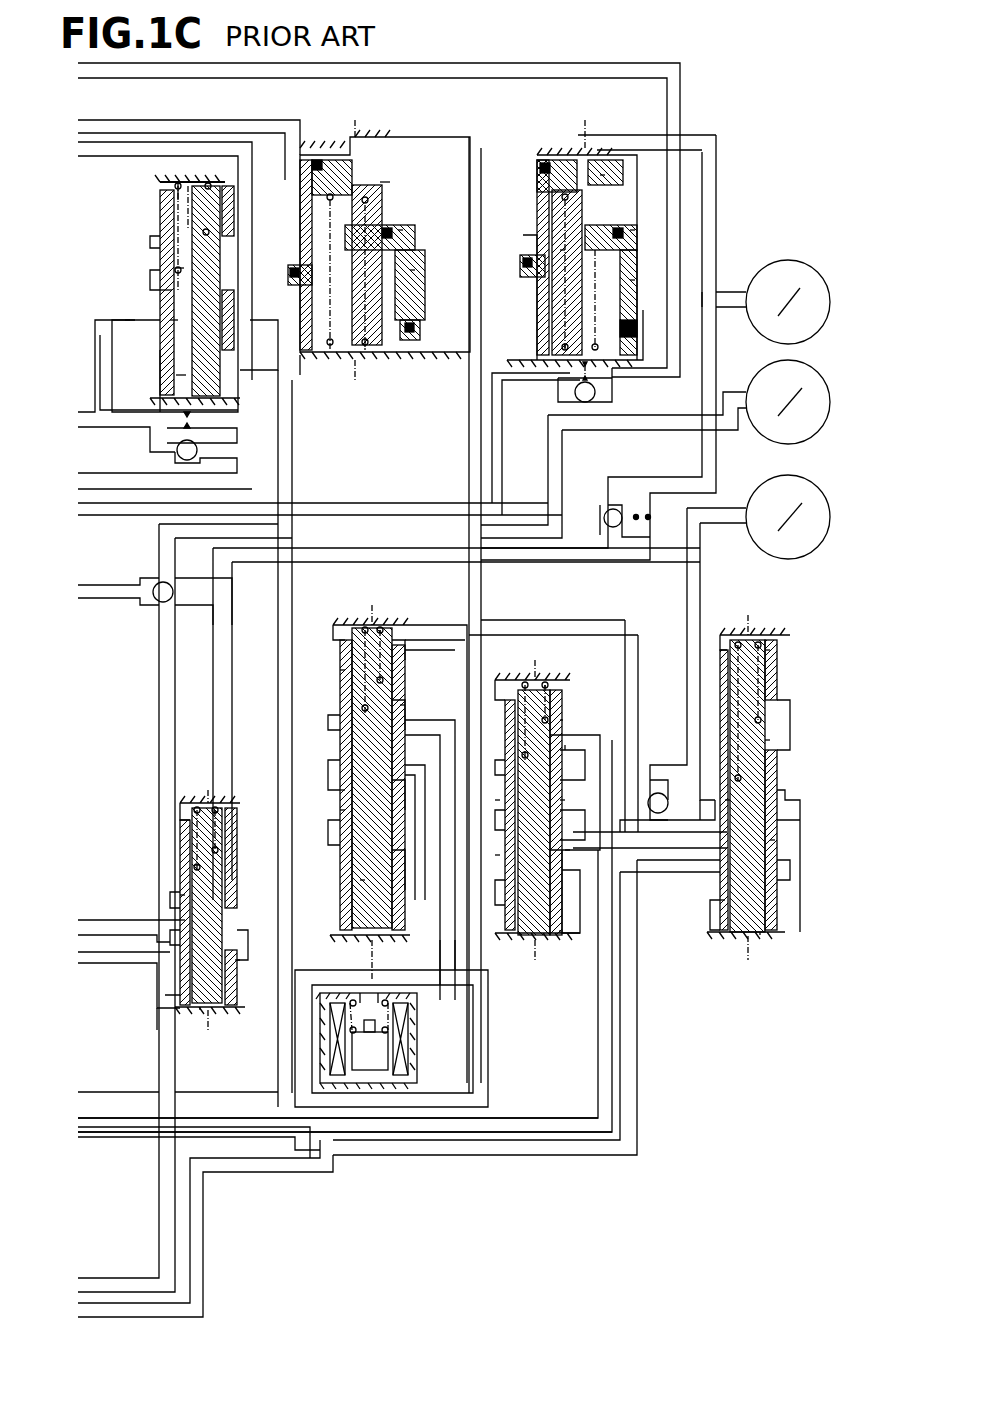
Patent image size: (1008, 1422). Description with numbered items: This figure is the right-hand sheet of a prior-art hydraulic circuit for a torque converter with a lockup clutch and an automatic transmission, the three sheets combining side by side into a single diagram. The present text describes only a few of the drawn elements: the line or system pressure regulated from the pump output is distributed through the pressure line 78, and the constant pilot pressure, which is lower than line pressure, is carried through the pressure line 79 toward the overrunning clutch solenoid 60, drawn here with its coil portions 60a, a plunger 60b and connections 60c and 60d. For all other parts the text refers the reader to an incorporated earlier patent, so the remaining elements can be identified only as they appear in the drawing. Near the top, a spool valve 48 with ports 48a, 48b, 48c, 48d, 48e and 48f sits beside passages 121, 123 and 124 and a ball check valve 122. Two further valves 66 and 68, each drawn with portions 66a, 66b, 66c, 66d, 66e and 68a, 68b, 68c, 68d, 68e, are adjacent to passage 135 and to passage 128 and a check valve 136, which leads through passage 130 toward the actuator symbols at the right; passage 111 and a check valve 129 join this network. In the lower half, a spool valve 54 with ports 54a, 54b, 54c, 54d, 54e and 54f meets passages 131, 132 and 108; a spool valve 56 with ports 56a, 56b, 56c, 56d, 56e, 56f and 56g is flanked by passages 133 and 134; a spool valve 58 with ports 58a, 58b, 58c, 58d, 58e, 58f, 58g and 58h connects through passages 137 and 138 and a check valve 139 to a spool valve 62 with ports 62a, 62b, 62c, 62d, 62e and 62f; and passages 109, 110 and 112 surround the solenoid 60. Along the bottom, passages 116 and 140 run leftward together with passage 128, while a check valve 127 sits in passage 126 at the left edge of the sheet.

The manual valve 48 is at (150, 240).
The port 48a is at (172, 182).
The port 48b is at (176, 270).
The port 48c is at (172, 296).
The port 48d is at (175, 322).
The port 48e is at (172, 378).
The port 48f is at (130, 322).
The shift valve 54 is at (185, 798).
The port 54a is at (232, 820).
The port 54b is at (196, 866).
The port 54c is at (186, 925).
The port 54d is at (240, 960).
The port 54e is at (184, 893).
The port 54f is at (200, 1012).
The shift valve 56 is at (358, 618).
The port 56a is at (385, 625).
The port 56b is at (346, 668).
The port 56c is at (362, 880).
The port 56d is at (402, 718).
The port 56e is at (342, 786).
The port 56f is at (340, 812).
The port 56g is at (338, 624).
The shift valve 58 is at (525, 675).
The port 58a is at (550, 680).
The port 58b is at (562, 712).
The port 58c is at (556, 942).
The port 58d is at (500, 795).
The port 58e is at (570, 810).
The port 58f is at (572, 840).
The port 58g is at (500, 855).
The port 58h is at (572, 748).
The overrunning clutch solenoid 60 is at (392, 1020).
The coil 60a is at (408, 1070).
The plunger 60b is at (388, 1050).
The port 60c is at (412, 1022).
The port 60d is at (378, 995).
The shift valve 62 is at (712, 948).
The port 62a is at (777, 672).
The port 62b is at (770, 745).
The port 62c is at (722, 898).
The port 62d is at (780, 838).
The port 62e is at (727, 780).
The port 62f is at (762, 942).
The pressure control valve 66 is at (332, 137).
The port 66a is at (400, 232).
The port 66b is at (364, 352).
The spool 66c is at (412, 285).
The plug 66d is at (395, 182).
The port 66e is at (310, 358).
The pressure control valve 68 is at (540, 135).
The port 68a is at (640, 235).
The port 68b is at (570, 348).
The spool 68c is at (640, 285).
The plug 68d is at (610, 178).
The port 68e is at (544, 284).
The pressure line 78 is at (232, 120).
The pressure line 79 is at (283, 1150).
The oil passage 108 is at (178, 1000).
The oil passage 109 is at (456, 950).
The oil passage 110 is at (332, 985).
The oil passage 111 is at (105, 517).
The oil passage 112 is at (278, 1074).
The oil passage 116 is at (510, 1135).
The oil passage 121 is at (245, 190).
The check valve 122 is at (172, 460).
The oil passage 123 is at (95, 368).
The oil passage 124 is at (86, 480).
The oil passage 126 is at (110, 600).
The check valve 127 is at (165, 602).
The oil passage 128 is at (718, 155).
The check valve 129 is at (652, 530).
The oil passage 130 is at (562, 455).
The oil passage 131 is at (90, 918).
The oil passage 132 is at (88, 965).
The oil passage 133 is at (278, 664).
The oil passage 134 is at (442, 720).
The oil passage 135 is at (494, 63).
The check valve 136 is at (630, 385).
The oil passage 137 is at (662, 850).
The oil passage 138 is at (700, 644).
The check valve 139 is at (650, 790).
The oil passage 140 is at (626, 622).